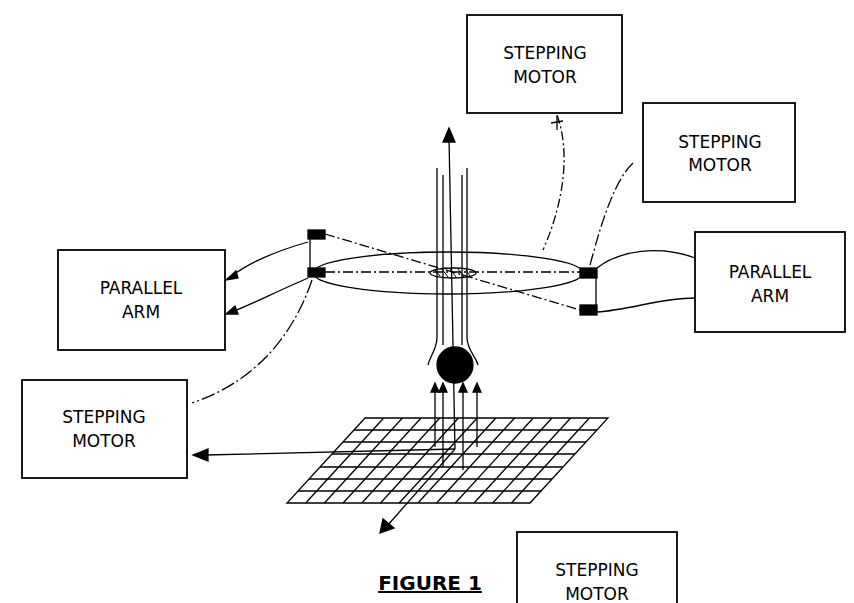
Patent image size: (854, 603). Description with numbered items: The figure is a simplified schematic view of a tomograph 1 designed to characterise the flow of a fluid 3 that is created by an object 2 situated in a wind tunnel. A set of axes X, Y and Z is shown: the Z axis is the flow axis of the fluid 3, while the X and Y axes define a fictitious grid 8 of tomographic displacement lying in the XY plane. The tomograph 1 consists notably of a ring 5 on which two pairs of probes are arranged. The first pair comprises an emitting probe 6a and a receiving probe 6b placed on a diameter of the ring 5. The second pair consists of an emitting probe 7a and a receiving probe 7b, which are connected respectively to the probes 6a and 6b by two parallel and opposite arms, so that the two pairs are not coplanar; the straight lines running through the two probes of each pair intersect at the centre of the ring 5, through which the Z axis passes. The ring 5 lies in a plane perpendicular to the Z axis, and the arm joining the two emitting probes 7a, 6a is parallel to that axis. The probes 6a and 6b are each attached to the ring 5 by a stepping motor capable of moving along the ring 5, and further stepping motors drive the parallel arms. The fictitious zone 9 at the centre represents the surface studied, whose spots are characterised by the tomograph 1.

The tomograph 1 is at (323, 198).
The object 2 is at (477, 372).
The fluid 3 is at (430, 338).
The ring 5 is at (378, 294).
The emitting probe 6a is at (308, 278).
The receiving probe 6b is at (597, 272).
The emitting probe 7a is at (308, 234).
The receiving probe 7b is at (597, 312).
The fictitious grid 8 is at (556, 494).
The fictitious zone 9 is at (482, 264).